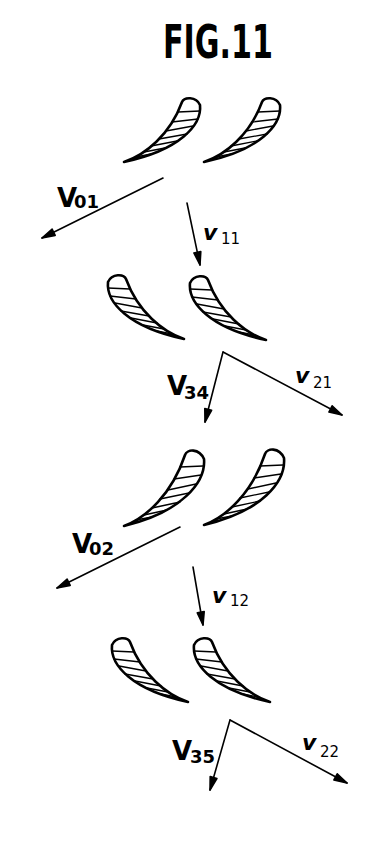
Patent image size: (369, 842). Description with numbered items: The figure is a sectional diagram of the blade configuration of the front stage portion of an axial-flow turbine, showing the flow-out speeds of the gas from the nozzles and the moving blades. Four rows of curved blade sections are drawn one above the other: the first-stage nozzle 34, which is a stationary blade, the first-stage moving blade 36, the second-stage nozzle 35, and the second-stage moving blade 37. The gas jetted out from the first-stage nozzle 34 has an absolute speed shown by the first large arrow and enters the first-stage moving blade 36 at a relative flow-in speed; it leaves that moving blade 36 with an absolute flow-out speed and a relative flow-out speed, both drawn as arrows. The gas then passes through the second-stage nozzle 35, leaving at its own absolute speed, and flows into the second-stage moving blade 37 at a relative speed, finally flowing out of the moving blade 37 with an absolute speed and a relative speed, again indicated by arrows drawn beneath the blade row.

The first-stage nozzle 34 is at (273, 127).
The first-stage moving blade 36 is at (222, 310).
The second-stage nozzle 35 is at (272, 493).
The second-stage moving blade 37 is at (228, 670).